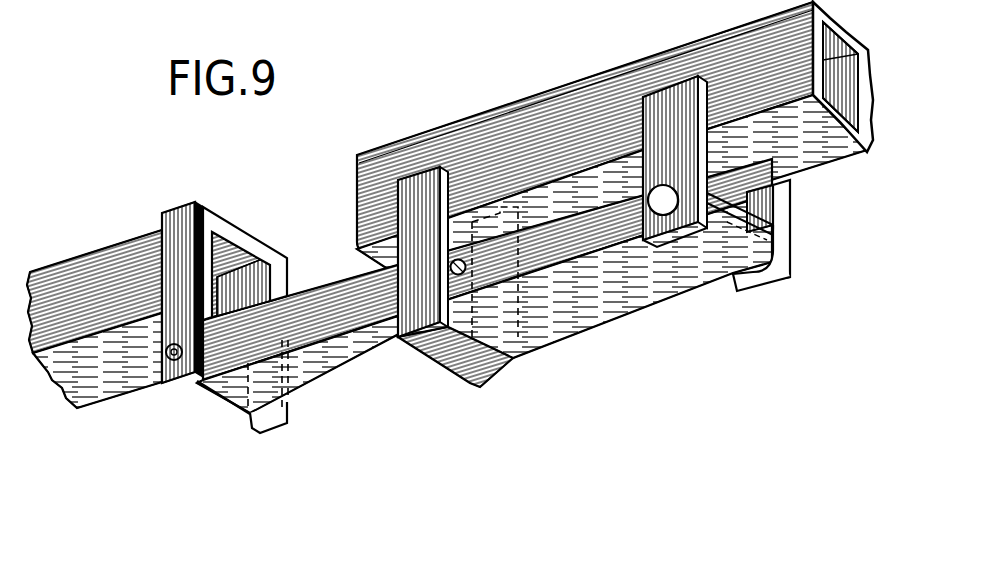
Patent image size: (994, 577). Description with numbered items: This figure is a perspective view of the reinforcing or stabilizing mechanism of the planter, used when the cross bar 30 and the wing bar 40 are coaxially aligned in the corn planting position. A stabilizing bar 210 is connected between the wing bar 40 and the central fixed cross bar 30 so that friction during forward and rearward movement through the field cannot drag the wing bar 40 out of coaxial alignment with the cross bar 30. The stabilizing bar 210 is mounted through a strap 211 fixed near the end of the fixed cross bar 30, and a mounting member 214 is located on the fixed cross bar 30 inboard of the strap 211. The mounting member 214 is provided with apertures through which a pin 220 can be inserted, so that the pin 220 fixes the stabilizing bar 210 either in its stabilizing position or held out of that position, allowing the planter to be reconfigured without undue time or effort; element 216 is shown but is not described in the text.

The cross bar 30 is at (613, 77).
The wing bar 40 is at (80, 273).
The stabilizing bar 210 is at (373, 360).
The strap 211 is at (498, 380).
The mounting member 214 is at (707, 107).
The bolt 216 is at (474, 245).
The pin 220 is at (172, 360).